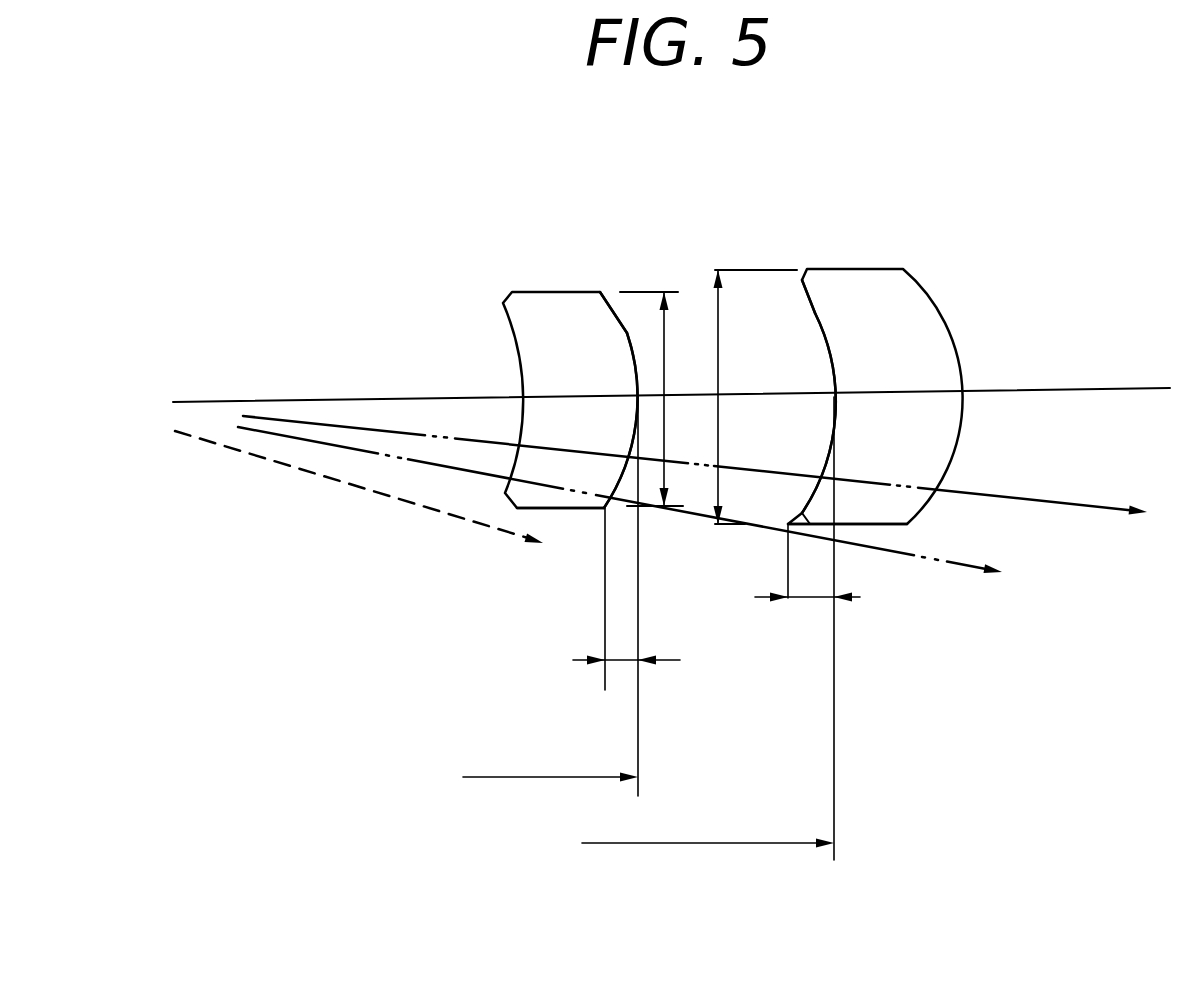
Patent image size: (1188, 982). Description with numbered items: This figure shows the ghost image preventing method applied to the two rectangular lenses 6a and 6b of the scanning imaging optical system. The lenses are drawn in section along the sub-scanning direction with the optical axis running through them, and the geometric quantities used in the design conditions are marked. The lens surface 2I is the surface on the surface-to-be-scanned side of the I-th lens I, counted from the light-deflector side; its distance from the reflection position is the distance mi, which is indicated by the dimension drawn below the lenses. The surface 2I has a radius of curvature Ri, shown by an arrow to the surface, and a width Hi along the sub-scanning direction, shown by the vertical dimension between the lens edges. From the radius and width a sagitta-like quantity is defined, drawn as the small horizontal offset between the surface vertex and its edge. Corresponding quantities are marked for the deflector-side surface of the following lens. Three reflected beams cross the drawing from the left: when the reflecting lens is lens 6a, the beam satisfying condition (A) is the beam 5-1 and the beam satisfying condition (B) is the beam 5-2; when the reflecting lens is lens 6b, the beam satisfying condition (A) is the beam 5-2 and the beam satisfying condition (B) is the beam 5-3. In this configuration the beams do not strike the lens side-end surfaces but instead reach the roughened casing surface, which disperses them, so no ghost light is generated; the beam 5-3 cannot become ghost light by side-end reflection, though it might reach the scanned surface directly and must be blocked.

The lens 6a is at (552, 292).
The lens 6b is at (887, 270).
The lens surface 2I is at (627, 333).
The radius of curvature Ri is at (603, 326).
The width of lens surface Hi is at (659, 399).
The beam 5-1 is at (423, 505).
The beam 5-2 is at (687, 512).
The beam 5-3 is at (1050, 502).
The I-th lens I is at (550, 497).
The distance mi is at (550, 596).